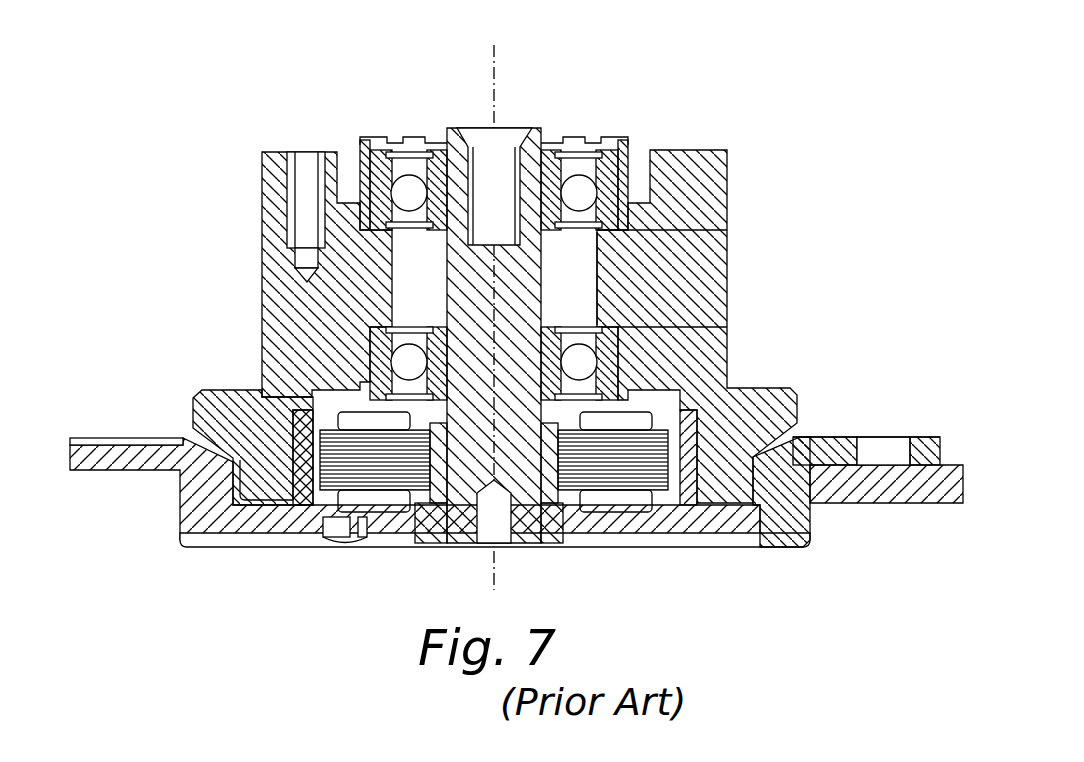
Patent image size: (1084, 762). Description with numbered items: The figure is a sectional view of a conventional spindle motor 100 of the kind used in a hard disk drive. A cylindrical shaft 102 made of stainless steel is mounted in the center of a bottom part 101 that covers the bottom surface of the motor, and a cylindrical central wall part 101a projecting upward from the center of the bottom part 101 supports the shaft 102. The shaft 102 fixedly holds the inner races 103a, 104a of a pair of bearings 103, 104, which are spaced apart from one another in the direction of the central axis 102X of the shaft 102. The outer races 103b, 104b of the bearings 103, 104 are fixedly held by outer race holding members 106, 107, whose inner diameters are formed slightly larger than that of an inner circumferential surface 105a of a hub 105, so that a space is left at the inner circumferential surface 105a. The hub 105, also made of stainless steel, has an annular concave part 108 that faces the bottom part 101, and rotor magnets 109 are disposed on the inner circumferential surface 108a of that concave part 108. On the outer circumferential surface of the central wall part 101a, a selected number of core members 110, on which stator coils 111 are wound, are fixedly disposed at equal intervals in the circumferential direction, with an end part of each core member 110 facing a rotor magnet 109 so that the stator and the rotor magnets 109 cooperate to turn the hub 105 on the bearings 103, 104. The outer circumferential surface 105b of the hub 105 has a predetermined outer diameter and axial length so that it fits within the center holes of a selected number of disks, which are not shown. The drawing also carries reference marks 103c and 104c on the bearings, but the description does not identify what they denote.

The spindle motor 100 is at (747, 36).
The bottom part 101 is at (516, 514).
The central wall part 101a is at (418, 512).
The shaft 102 is at (460, 503).
The central axis 102X is at (494, 74).
The bearing 103 is at (479, 147).
The inner race 103a is at (428, 176).
The outer race 103b is at (358, 180).
The inner race of upper bearing 103c is at (600, 172).
The bearing 104 is at (500, 341).
The inner race 104a is at (437, 323).
The outer race 104b is at (380, 347).
The ball of lower bearing 104c is at (584, 362).
The hub 105 is at (711, 326).
The inner circumferential surface 105a is at (600, 248).
The outer circumferential surface 105b is at (262, 202).
The outer race holding member 106 is at (600, 232).
The outer race holding member 107 is at (618, 338).
The annular concave part 108 is at (210, 427).
The inner circumferential surface 108a is at (302, 403).
The rotor magnet 109 is at (302, 490).
The core member 110 is at (603, 477).
The stator coil 111 is at (637, 422).